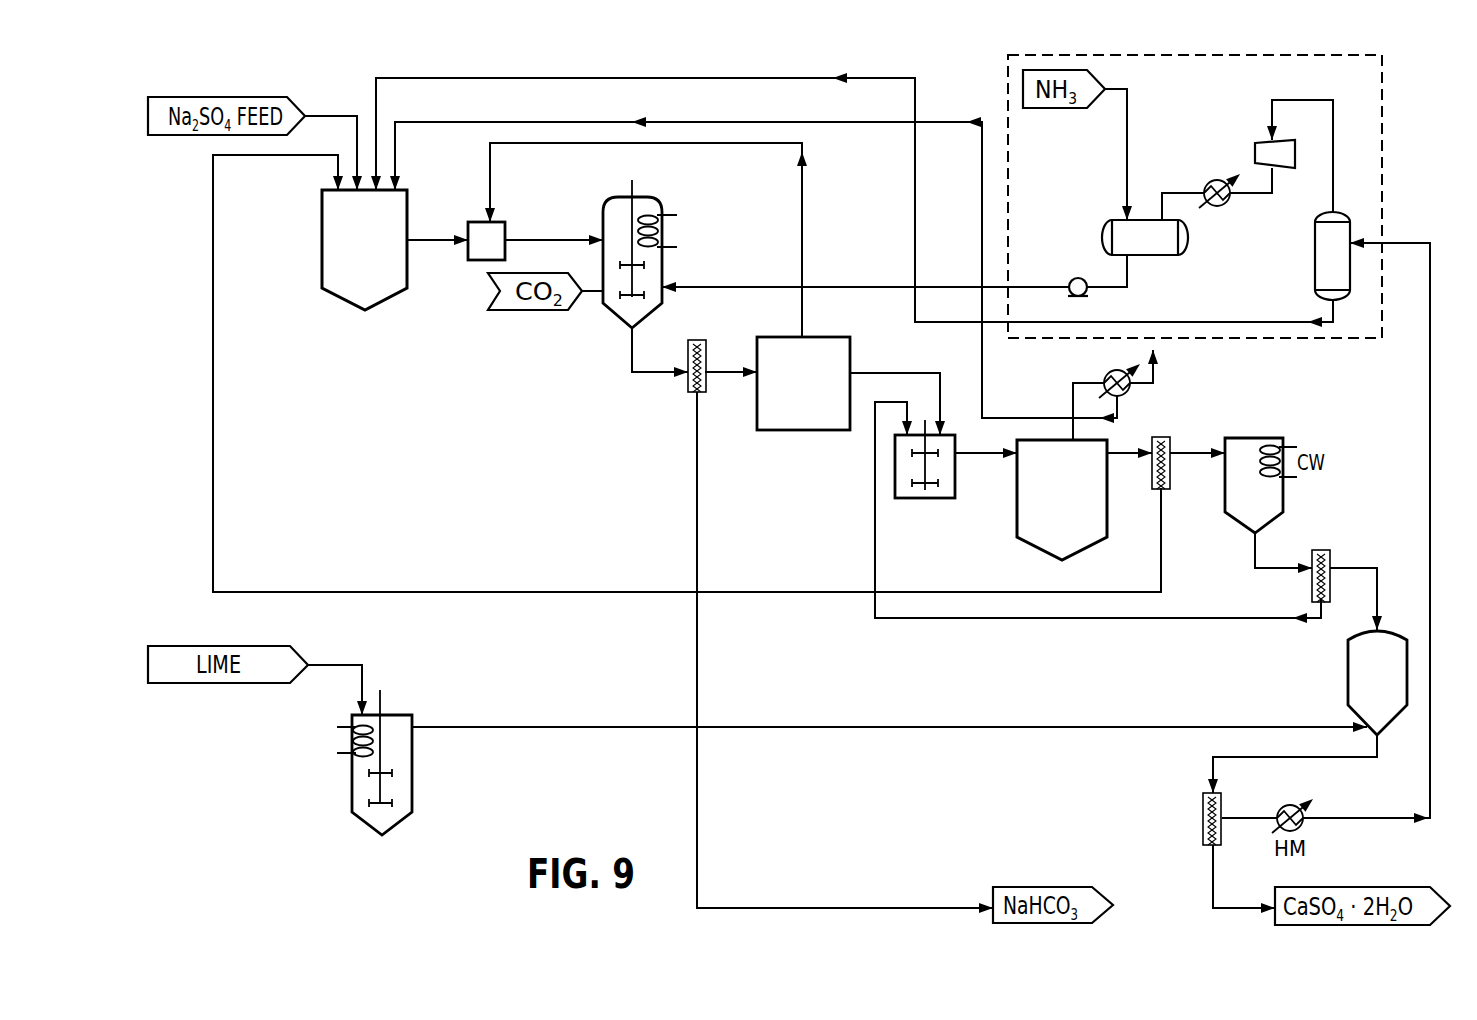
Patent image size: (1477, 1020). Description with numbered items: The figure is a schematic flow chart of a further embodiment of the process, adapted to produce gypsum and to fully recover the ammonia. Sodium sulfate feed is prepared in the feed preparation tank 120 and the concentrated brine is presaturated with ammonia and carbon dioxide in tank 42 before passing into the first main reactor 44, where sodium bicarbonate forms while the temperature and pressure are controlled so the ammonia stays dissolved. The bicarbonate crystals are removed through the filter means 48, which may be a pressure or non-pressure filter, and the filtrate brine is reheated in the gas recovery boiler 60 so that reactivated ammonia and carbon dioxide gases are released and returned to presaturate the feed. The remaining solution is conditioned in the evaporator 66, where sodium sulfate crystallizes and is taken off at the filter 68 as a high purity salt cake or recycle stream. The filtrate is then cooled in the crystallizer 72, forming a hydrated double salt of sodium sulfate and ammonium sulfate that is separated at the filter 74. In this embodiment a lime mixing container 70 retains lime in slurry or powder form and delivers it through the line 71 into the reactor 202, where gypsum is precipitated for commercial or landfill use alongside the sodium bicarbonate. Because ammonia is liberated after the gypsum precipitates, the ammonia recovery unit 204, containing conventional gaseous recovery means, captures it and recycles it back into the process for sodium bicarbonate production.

The feed preparation tank 120 is at (322, 231).
The presaturation tank 42 is at (469, 222).
The first main reactor 44 is at (603, 207).
The filter means 48 is at (699, 340).
The gas recovery boiler 60 is at (785, 336).
The evaporator 66 is at (1045, 539).
The filter 68 is at (1160, 437).
The crystallizer 72 is at (1275, 438).
The filter 74 is at (1320, 550).
The lime mixing container 70 is at (352, 763).
The line 71 is at (894, 729).
The reactor 202 is at (1348, 677).
The ammonia recovery unit 204 is at (1382, 165).